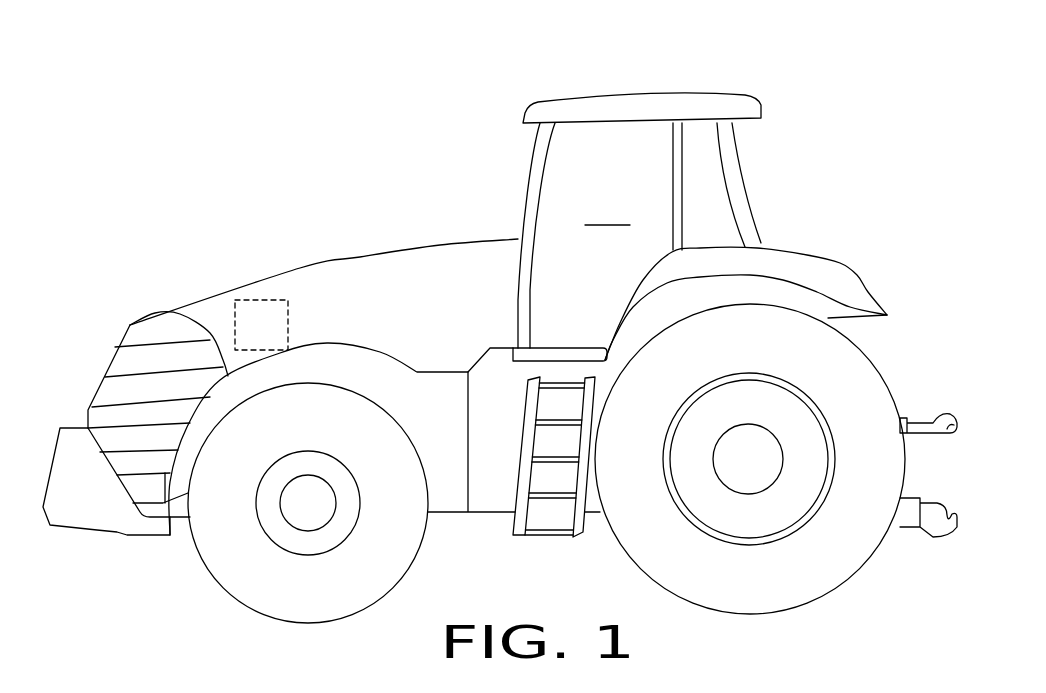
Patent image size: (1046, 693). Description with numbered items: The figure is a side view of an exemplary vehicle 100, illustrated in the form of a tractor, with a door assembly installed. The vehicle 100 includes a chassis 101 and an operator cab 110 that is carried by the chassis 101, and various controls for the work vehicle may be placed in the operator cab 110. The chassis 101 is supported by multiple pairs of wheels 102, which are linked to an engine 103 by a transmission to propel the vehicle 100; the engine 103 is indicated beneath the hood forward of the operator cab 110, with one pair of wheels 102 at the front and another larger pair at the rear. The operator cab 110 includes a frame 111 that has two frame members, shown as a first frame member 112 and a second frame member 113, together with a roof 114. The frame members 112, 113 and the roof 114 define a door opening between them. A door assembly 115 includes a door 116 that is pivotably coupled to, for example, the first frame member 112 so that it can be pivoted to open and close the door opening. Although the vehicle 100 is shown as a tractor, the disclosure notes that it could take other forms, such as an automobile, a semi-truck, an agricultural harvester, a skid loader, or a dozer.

The vehicle 100 is at (830, 130).
The chassis 101 is at (853, 284).
The wheels 102 is at (247, 600).
The engine 103 is at (235, 312).
The operator cab 110 is at (595, 90).
The frame 111 is at (532, 158).
The first frame member 112 is at (683, 152).
The second frame member 113 is at (530, 220).
The roof 114 is at (637, 97).
The door assembly 115 is at (582, 158).
The door 116 is at (607, 210).